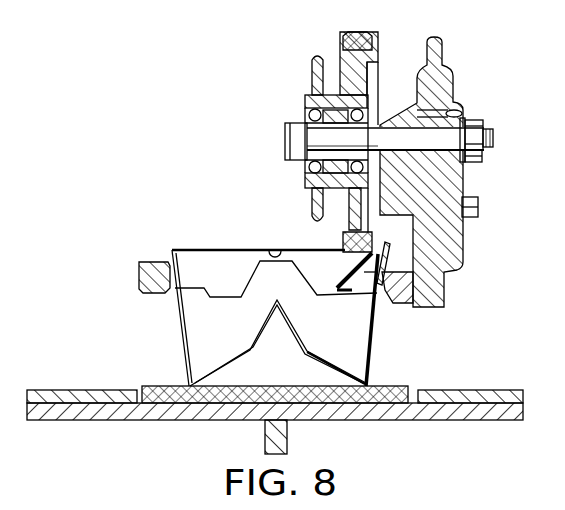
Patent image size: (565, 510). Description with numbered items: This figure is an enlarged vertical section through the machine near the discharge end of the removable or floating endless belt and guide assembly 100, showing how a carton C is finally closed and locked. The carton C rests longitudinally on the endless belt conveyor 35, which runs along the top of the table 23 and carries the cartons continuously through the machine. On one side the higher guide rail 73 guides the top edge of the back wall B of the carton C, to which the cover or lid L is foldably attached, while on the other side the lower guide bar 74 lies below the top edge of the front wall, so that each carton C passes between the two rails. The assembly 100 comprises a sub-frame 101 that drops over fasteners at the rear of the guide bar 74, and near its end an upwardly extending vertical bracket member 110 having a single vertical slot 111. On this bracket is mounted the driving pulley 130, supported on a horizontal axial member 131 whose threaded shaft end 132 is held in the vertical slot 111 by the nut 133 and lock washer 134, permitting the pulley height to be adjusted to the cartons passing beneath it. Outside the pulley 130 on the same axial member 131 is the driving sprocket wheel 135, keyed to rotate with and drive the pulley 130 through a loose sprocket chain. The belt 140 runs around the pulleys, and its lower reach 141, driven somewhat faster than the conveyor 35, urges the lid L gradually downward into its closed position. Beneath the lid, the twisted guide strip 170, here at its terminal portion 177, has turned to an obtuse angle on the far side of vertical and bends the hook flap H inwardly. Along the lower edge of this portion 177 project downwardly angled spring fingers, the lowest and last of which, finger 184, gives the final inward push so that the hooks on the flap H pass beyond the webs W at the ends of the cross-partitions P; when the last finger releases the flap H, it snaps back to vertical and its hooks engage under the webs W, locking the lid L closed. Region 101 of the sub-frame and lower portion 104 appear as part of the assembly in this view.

The table 23 is at (507, 412).
The endless belt conveyor 35 is at (393, 386).
The guide rail 73 is at (140, 268).
The lower guide bar 74 is at (402, 305).
The removable endless belt and guide assembly 100 is at (467, 70).
The sub-frame 101 is at (446, 289).
The hub bottom flange 104 is at (439, 307).
The vertical bracket member 110 is at (444, 50).
The vertical slot 111 is at (462, 114).
The driving pulley 130 is at (374, 74).
The horizontal axial member 131 is at (313, 140).
The shaft end 132 is at (487, 134).
The nut 133 is at (483, 152).
The lock washer 134 is at (461, 158).
The driving sprocket wheel 135 is at (316, 80).
The belt 140 is at (347, 36).
The lower reach of belt 141 is at (341, 232).
The twisted guide strip 170 is at (394, 260).
The terminal portion of guide strip 177 is at (388, 249).
The spring finger 184 is at (343, 296).
The back wall B is at (176, 311).
The egg carton C is at (176, 341).
The hook flap H is at (350, 276).
The lid L is at (231, 250).
The cross-partition P is at (230, 331).
The web W is at (363, 291).